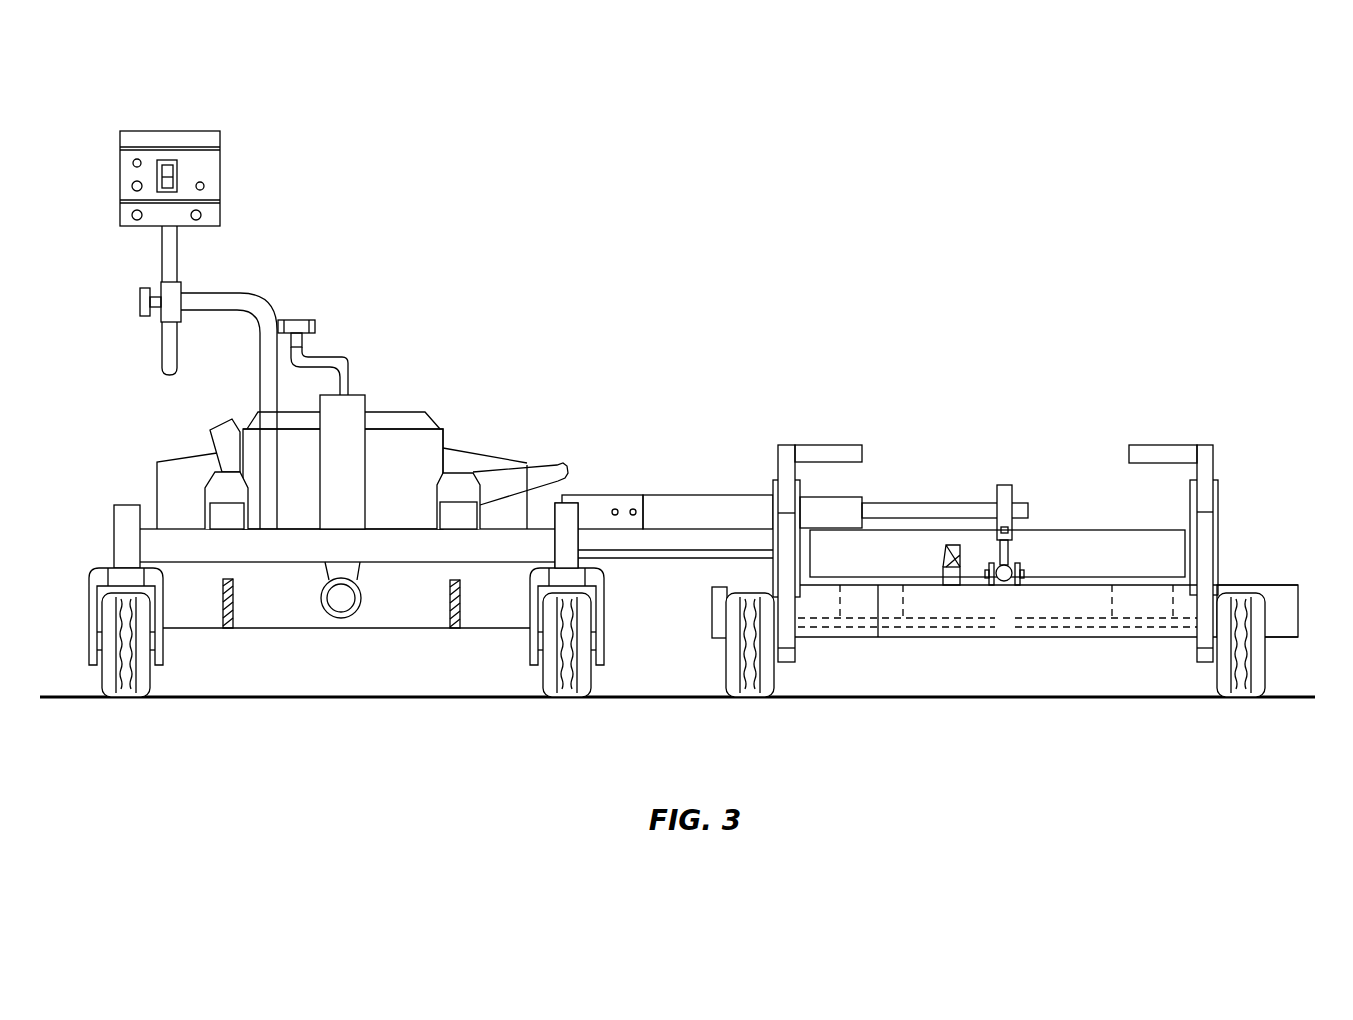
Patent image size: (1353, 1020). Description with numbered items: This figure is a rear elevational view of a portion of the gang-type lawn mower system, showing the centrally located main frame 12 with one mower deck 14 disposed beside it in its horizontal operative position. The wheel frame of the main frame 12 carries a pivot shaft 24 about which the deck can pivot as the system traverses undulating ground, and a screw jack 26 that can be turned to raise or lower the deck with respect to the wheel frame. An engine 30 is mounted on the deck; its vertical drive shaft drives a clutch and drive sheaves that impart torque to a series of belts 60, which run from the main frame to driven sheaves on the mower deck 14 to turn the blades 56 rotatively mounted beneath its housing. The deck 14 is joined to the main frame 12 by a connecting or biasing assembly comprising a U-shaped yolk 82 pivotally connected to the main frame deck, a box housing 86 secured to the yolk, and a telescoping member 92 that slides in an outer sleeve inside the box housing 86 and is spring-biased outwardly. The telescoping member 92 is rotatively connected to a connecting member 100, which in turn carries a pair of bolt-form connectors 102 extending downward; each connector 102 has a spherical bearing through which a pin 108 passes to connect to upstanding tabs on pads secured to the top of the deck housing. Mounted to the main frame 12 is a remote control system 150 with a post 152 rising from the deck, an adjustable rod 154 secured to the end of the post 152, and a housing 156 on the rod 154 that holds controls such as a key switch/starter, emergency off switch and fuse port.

The main frame 12 is at (317, 570).
The mower deck 14 is at (1032, 574).
The pivot shaft 24 is at (359, 603).
The screw jack 26 is at (345, 442).
The engine 30 is at (403, 452).
The blade 56 is at (938, 627).
The belt 60 is at (662, 559).
The U-shaped yolk 82 is at (622, 502).
The box housing 86 is at (707, 510).
The telescoping member 92 is at (925, 510).
The connecting member 100 is at (995, 492).
The connector 102 is at (1010, 565).
The pin 108 is at (1027, 573).
The remote control system 150 is at (233, 310).
The post 152 is at (248, 306).
The adjustable rod 154 is at (168, 364).
The housing 156 is at (190, 137).